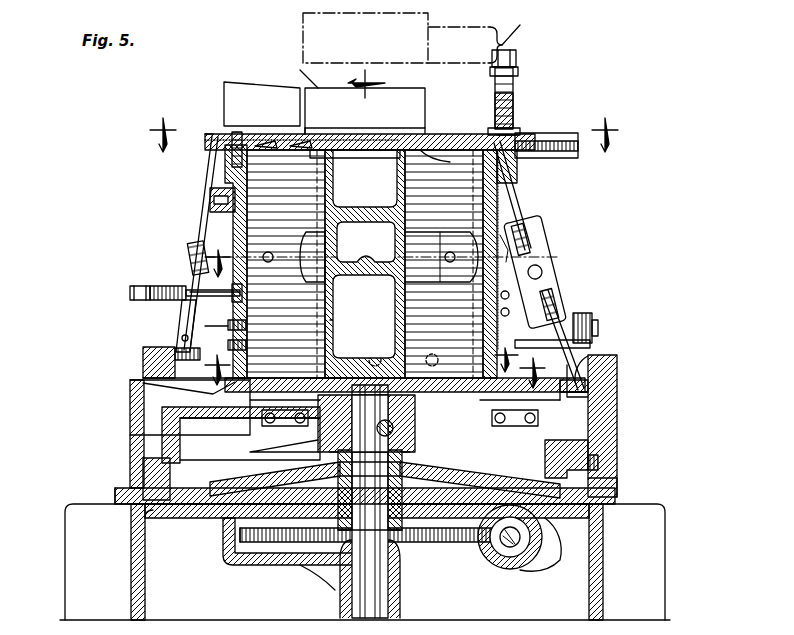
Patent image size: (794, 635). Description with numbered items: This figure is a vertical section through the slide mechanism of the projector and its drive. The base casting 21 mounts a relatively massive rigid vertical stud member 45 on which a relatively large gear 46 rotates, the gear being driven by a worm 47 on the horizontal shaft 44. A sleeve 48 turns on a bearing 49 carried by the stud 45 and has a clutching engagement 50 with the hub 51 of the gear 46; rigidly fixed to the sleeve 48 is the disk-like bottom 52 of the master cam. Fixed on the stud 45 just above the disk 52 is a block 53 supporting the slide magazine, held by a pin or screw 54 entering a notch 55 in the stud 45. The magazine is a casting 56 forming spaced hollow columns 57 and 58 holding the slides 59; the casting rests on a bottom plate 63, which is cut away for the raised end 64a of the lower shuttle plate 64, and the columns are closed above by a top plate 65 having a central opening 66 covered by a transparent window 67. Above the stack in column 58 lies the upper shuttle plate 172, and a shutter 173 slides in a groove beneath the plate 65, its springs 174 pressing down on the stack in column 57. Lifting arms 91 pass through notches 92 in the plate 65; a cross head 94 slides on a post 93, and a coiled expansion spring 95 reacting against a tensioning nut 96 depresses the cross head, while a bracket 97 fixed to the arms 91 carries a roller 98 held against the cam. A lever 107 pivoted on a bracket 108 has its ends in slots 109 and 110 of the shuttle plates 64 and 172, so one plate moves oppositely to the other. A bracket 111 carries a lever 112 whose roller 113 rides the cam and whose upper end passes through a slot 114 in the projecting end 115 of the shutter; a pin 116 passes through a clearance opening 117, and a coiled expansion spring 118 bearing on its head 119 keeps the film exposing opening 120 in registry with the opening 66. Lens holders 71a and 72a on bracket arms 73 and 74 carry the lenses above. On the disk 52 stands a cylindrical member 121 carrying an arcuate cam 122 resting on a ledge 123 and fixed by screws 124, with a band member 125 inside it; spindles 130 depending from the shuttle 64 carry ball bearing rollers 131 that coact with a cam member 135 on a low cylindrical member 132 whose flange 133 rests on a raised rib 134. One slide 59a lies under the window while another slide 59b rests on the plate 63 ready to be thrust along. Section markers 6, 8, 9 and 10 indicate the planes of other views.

The base 21 is at (603, 575).
The horizontal shaft 44 is at (508, 548).
The vertical stud member 45 is at (385, 598).
The gear 46 is at (460, 543).
The worm 47 is at (525, 550).
The sleeve 48 is at (420, 486).
The bearing 49 is at (405, 475).
The clutching engagement 50 is at (335, 575).
The hub 51 is at (300, 545).
The disk-like bottom 52 is at (210, 498).
The block 53 is at (340, 420).
The pin or screw 54 is at (330, 452).
The notch 55 is at (398, 432).
The casting 56 is at (356, 296).
The column 57 is at (212, 210).
The column 58 is at (508, 222).
The slides 59 is at (260, 184).
The slide 59a is at (368, 152).
The slide 59b is at (360, 378).
The bottom plate 63 is at (340, 380).
The lower shuttle plate 64 is at (605, 388).
The raised end 64a is at (295, 340).
The top plate 65 is at (443, 134).
The central opening 66 is at (372, 134).
The transparent window 67 is at (410, 130).
The lens holder 71a is at (293, 74).
The lens holder 72a is at (372, 80).
The bracket arm 73 is at (228, 82).
The bracket arm 74 is at (524, 28).
The arms 91 is at (512, 195).
The notches 92 is at (540, 133).
The post 93 is at (513, 95).
The cross head 94 is at (500, 110).
The coiled expansion spring 95 is at (515, 72).
The tensioning nut 96 is at (515, 55).
The bracket 97 is at (565, 325).
The roller 98 is at (590, 320).
The lever 107 is at (545, 245).
The bracket 108 is at (545, 262).
The slot 109 is at (605, 368).
The slot 110 is at (525, 134).
The bracket 111 is at (207, 326).
The lever 112 is at (180, 318).
The roller 113 is at (175, 352).
The slot 114 is at (237, 132).
The projecting end 115 is at (205, 134).
The pin 116 is at (150, 294).
The clearance opening 117 is at (190, 262).
The coiled expansion spring 118 is at (160, 293).
The head 119 is at (140, 286).
The film exposing opening 120 is at (361, 261).
The cylindrical member 121 is at (600, 422).
The arcuate cam 122 is at (603, 400).
The ledge 123 is at (610, 488).
The screws 124 is at (600, 450).
The band member 125 is at (143, 360).
The spindles 130 is at (295, 430).
The ball bearing rollers 131 is at (272, 424).
The cylindrical member 132 is at (160, 428).
The flange 133 is at (150, 460).
The raised rib 134 is at (150, 470).
The cam member 135 is at (165, 410).
The upper shuttle plate 172 is at (517, 170).
The shutter 173 is at (312, 134).
The springs 174 is at (300, 146).
The section line 6 is at (370, 433).
The section line 8 is at (378, 362).
The section line 9 is at (381, 135).
The section line 10 is at (367, 301).